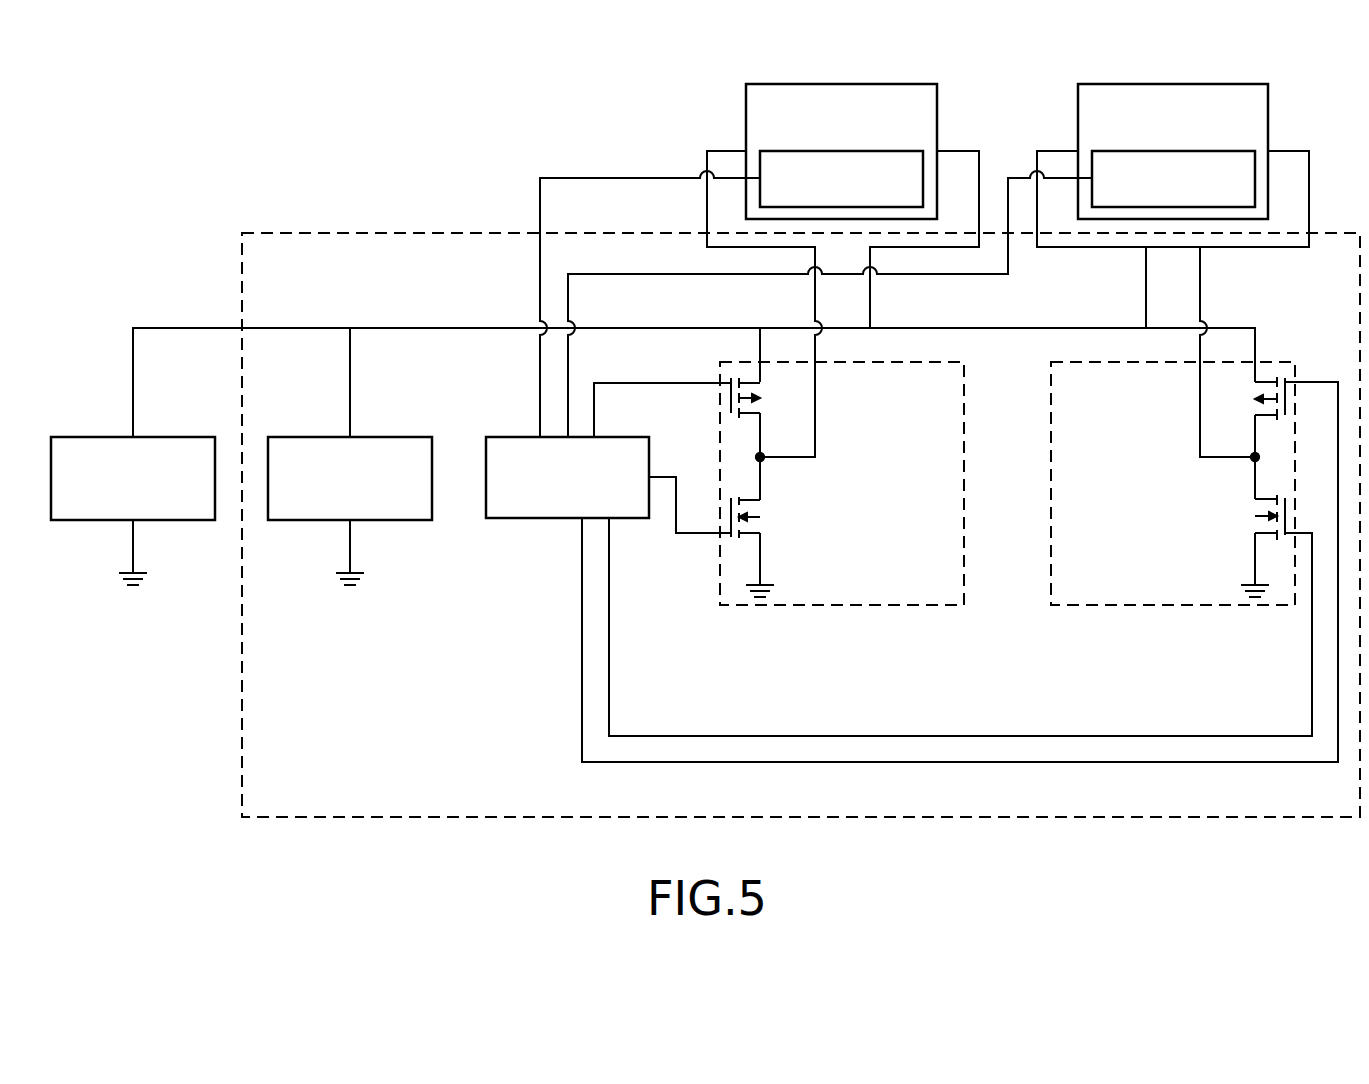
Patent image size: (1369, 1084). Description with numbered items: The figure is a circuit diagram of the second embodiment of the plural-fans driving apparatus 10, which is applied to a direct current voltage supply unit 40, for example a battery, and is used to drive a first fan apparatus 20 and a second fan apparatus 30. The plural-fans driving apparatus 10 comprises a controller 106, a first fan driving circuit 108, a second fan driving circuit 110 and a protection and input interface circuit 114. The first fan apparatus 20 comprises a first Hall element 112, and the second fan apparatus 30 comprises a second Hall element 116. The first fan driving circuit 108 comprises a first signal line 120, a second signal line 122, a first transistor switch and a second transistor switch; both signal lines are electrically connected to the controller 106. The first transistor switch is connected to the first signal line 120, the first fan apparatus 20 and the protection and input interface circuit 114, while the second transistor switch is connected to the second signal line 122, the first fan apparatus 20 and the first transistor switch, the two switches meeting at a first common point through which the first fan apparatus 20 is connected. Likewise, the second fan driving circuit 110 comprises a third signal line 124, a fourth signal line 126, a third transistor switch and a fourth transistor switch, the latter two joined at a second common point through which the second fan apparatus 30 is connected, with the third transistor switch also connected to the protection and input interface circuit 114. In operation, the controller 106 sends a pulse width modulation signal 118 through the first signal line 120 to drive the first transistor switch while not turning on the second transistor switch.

The plural-fans driving apparatus 10 is at (966, 813).
The first fan apparatus 20 is at (930, 109).
The second fan apparatus 30 is at (1262, 109).
The direct current voltage supply unit 40 is at (123, 440).
The controller 106 is at (530, 440).
The first fan driving circuit 108 is at (842, 600).
The second fan driving circuit 110 is at (1174, 600).
The first Hall element 112 is at (900, 155).
The protection and input interface circuit 114 is at (340, 440).
The second Hall element 116 is at (1232, 155).
The pulse width modulation signal 118 is at (595, 408).
The first signal line 120 is at (662, 396).
The second signal line 122 is at (690, 505).
The third signal line 124 is at (960, 574).
The fourth signal line 126 is at (960, 628).